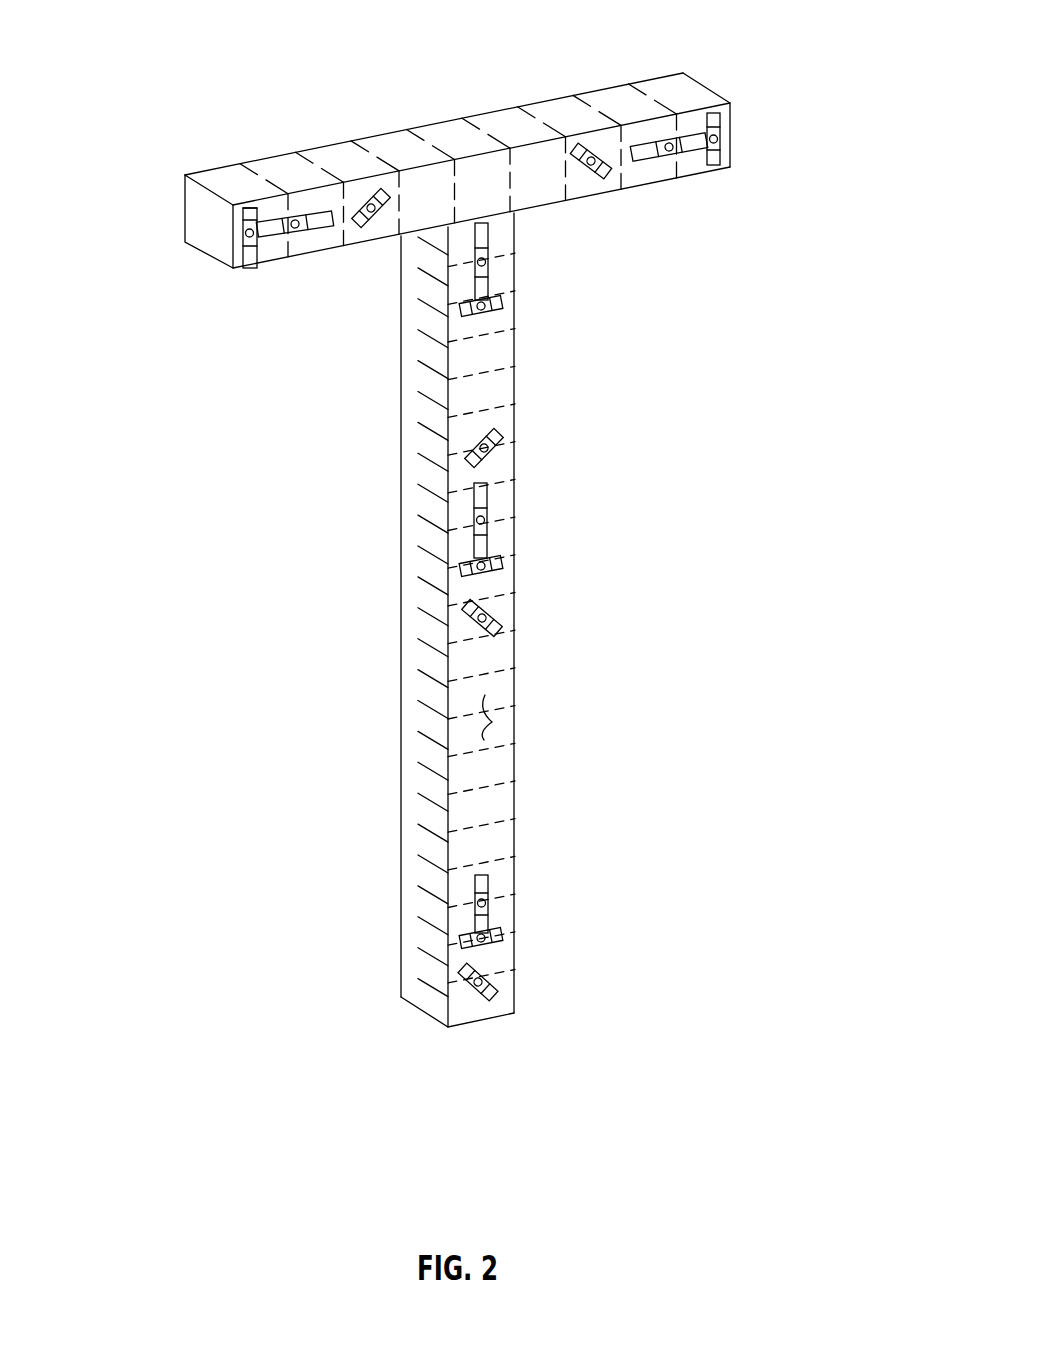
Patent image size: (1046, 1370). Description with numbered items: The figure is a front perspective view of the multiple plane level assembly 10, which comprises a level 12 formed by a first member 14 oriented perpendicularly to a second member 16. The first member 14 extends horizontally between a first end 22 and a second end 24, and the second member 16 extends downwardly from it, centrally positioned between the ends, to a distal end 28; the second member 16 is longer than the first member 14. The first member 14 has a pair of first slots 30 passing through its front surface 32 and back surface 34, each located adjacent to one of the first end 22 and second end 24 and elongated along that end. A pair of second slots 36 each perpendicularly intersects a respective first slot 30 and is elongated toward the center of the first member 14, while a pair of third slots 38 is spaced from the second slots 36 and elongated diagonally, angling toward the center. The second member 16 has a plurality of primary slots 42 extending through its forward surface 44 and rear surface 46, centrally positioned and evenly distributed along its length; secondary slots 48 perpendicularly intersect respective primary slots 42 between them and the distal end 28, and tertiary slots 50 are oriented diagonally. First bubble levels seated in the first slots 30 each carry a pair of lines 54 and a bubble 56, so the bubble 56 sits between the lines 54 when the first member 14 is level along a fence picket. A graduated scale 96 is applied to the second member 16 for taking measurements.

The multiple plane level assembly 10 is at (166, 45).
The level 12 is at (421, 93).
The first member 14 is at (267, 157).
The second member 16 is at (515, 420).
The first end 22 is at (205, 218).
The second end 24 is at (710, 90).
The distal end 28 is at (477, 1023).
The first slots 30 is at (250, 265).
The front surface 32 is at (580, 183).
The back surface 34 is at (588, 91).
The second slots 36 is at (317, 229).
The third slots 38 is at (383, 193).
The primary slots 42 is at (475, 263).
The forward surface 44 is at (492, 723).
The rear surface 46 is at (400, 645).
The secondary slots 48 is at (498, 303).
The tertiary slots 50 is at (467, 460).
The pair of lines 54 is at (243, 218).
The bubble 56 is at (252, 237).
The graduated scale 96 is at (420, 785).